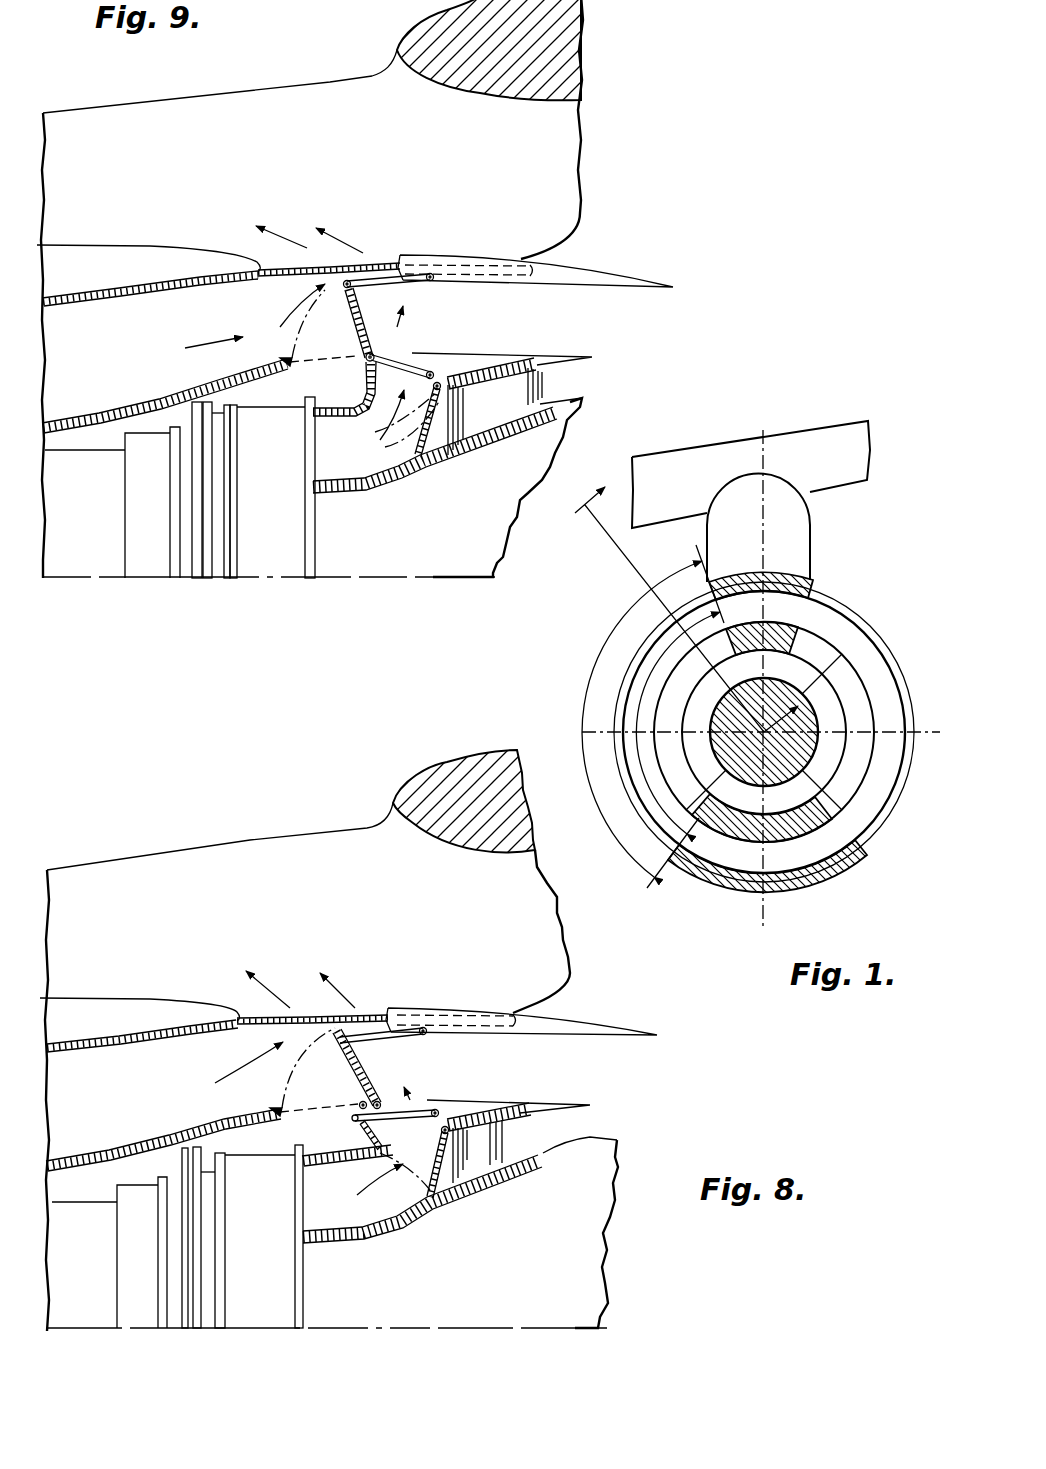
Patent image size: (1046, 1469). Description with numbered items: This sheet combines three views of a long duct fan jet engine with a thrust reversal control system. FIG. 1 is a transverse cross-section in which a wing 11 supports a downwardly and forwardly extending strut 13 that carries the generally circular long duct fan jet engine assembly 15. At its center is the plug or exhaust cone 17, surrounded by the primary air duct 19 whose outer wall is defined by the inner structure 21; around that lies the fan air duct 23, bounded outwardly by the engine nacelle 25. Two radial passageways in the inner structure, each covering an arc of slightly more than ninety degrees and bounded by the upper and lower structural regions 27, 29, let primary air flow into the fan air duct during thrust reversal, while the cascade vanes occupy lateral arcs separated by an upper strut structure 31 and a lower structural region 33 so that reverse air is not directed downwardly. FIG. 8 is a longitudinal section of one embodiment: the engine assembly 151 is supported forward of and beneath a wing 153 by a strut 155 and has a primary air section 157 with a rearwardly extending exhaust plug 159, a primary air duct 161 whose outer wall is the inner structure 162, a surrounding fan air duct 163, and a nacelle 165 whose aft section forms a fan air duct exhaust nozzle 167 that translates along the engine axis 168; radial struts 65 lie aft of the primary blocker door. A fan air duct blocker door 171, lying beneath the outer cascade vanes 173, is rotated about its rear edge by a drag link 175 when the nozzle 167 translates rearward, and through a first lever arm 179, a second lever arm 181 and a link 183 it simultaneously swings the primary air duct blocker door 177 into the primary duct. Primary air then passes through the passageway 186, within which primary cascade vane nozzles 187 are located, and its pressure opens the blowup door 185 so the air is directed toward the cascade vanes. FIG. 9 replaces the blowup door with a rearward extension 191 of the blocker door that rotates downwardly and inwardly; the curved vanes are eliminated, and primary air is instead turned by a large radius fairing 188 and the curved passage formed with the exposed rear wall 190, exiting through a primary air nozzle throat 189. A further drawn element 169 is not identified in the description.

In FIG. 1, the wing 11 is at (680, 453).
In FIG. 1, the strut 13 is at (800, 510).
In FIG. 1, the long duct fan jet engine assembly 15 is at (868, 600).
In FIG. 1, the plug or exhaust cone 17 is at (819, 700).
In FIG. 1, the primary air duct 19 is at (834, 721).
In FIG. 1, the inner structure 21 is at (852, 783).
In FIG. 1, the fan air duct 23 is at (856, 653).
In FIG. 1, the engine nacelle 25 is at (881, 833).
In FIG. 1, the upper structural region 27 is at (755, 640).
In FIG. 1, the lower structural region 29 is at (803, 826).
In FIG. 1, the upper strut structure 31 is at (812, 578).
In FIG. 1, the lower structural region 33 is at (785, 890).
In FIG. 9, the radial struts 65 is at (498, 412).
In FIG. 8, the radial struts 65 is at (477, 1165).
In FIG. 9, the long duct fan jet engine assembly 151 is at (566, 249).
In FIG. 8, the long duct fan jet engine assembly 151 is at (581, 1012).
In FIG. 9, the wing 153 is at (432, 37).
In FIG. 8, the wing 153 is at (437, 773).
In FIG. 9, the strut 155 is at (291, 84).
In FIG. 8, the strut 155 is at (240, 842).
In FIG. 8, the primary air section 157 is at (237, 1322).
In FIG. 8, the exhaust plug 159 is at (522, 1316).
In FIG. 9, the primary air duct 161 is at (347, 482).
In FIG. 8, the primary air duct 161 is at (347, 1222).
In FIG. 8, the inner structure 162 is at (340, 1144).
In FIG. 9, the fan air duct 163 is at (185, 334).
In FIG. 8, the fan air duct 163 is at (178, 1077).
In FIG. 9, the nacelle 165 is at (155, 248).
In FIG. 8, the nacelle 165 is at (153, 1006).
In FIG. 9, the fan air duct exhaust nozzle 167 is at (473, 256).
In FIG. 8, the fan air duct exhaust nozzle 167 is at (442, 1007).
In FIG. 8, the axis 168 is at (398, 1328).
In FIG. 9, the aft nacelle body 169 is at (497, 351).
In FIG. 9, the fan air duct blocker door 171 is at (352, 320).
In FIG. 8, the fan air duct blocker door 171 is at (356, 1055).
In FIG. 9, the outer cascade vanes 173 is at (351, 263).
In FIG. 8, the outer cascade vanes 173 is at (368, 1017).
In FIG. 9, the drag link 175 is at (418, 290).
In FIG. 8, the drag link 175 is at (422, 1038).
In FIG. 9, the primary air duct blocker door 177 is at (438, 466).
In FIG. 8, the primary air duct blocker door 177 is at (453, 1195).
In FIG. 9, the first lever arm 179 is at (460, 372).
In FIG. 8, the first lever arm 179 is at (462, 1115).
In FIG. 9, the second lever arm 181 is at (347, 367).
In FIG. 8, the second lever arm 181 is at (357, 1108).
In FIG. 9, the link 183 is at (400, 350).
In FIG. 8, the link 183 is at (427, 1103).
In FIG. 8, the blowup door 185 is at (385, 1082).
In FIG. 9, the passageway 186 is at (428, 425).
In FIG. 8, the passageway 186 is at (435, 1160).
In FIG. 8, the primary cascade vane nozzles 187 is at (400, 1128).
In FIG. 9, the large radius fairing 188 is at (365, 420).
In FIG. 9, the primary air nozzle throat 189 is at (388, 312).
In FIG. 9, the exposed rear wall 190 is at (452, 335).
In FIG. 9, the rearward extension 191 is at (368, 387).